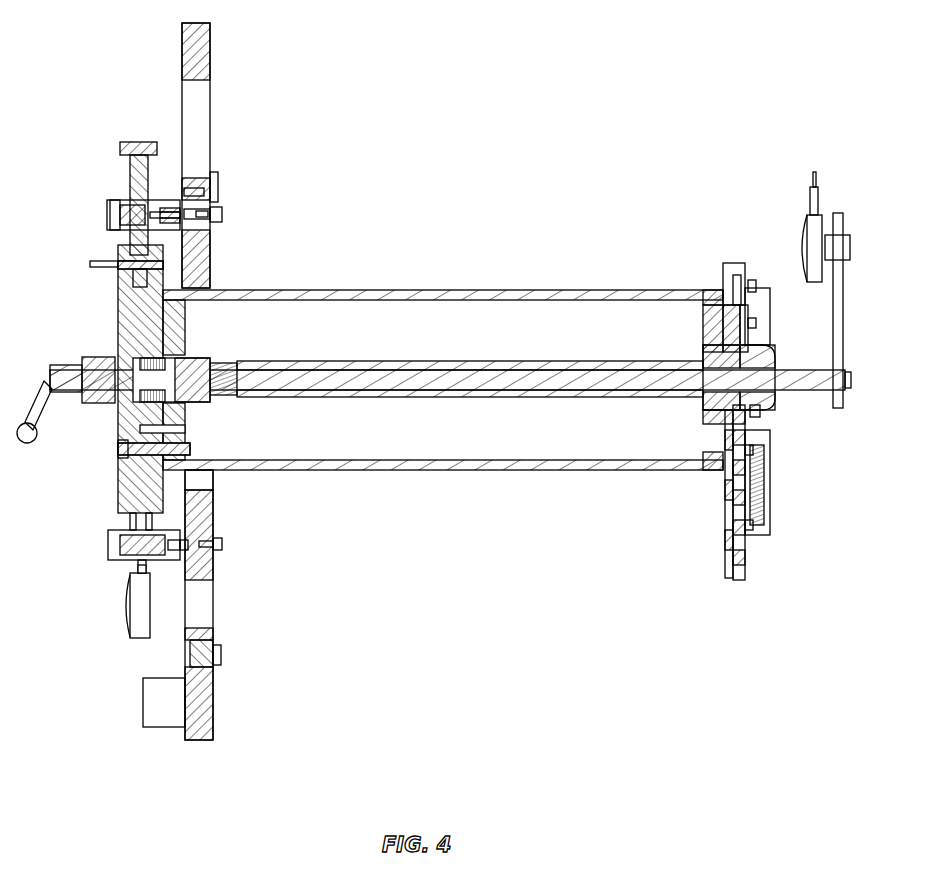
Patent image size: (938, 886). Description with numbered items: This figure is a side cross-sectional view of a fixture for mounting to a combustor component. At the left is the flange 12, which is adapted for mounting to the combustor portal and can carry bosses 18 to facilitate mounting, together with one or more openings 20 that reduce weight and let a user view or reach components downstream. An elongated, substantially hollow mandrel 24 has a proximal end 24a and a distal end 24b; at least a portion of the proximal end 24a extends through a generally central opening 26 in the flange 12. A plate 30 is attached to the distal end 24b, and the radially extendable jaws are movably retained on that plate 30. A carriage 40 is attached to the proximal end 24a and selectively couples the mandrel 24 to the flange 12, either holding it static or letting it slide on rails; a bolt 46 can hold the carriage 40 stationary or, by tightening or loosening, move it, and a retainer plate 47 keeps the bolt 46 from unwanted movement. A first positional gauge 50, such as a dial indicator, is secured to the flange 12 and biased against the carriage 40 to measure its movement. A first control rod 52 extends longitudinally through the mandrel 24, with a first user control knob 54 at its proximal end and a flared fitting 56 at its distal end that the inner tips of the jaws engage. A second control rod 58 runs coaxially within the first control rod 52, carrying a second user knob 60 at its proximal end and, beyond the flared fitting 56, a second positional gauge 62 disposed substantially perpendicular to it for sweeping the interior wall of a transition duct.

The flange 12 is at (200, 741).
The bosses 18 is at (162, 728).
The openings 20 is at (200, 128).
The elongated mandrel 24 is at (410, 290).
The proximal end 24a is at (190, 340).
The distal end 24b is at (703, 332).
The central opening 26 is at (205, 478).
The plate 30 is at (733, 265).
The carriage 40 is at (128, 480).
The bolt 46 is at (138, 140).
The retainer plate 47 is at (98, 260).
The first positional gauge 50 is at (128, 607).
The first control rod 52 is at (445, 398).
The first user control knob 54 is at (98, 352).
The flared fitting 56 is at (770, 408).
The second control rod 58 is at (598, 386).
The second user knob 60 is at (45, 407).
The second positional gauge 62 is at (820, 195).